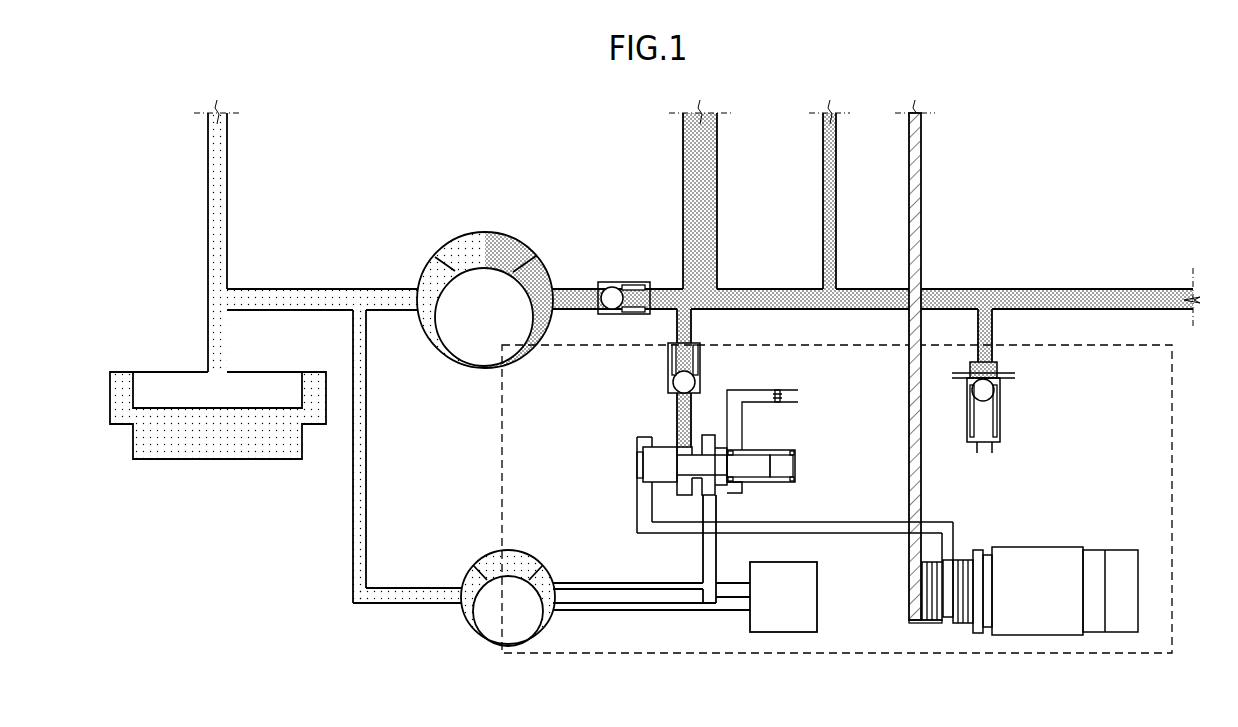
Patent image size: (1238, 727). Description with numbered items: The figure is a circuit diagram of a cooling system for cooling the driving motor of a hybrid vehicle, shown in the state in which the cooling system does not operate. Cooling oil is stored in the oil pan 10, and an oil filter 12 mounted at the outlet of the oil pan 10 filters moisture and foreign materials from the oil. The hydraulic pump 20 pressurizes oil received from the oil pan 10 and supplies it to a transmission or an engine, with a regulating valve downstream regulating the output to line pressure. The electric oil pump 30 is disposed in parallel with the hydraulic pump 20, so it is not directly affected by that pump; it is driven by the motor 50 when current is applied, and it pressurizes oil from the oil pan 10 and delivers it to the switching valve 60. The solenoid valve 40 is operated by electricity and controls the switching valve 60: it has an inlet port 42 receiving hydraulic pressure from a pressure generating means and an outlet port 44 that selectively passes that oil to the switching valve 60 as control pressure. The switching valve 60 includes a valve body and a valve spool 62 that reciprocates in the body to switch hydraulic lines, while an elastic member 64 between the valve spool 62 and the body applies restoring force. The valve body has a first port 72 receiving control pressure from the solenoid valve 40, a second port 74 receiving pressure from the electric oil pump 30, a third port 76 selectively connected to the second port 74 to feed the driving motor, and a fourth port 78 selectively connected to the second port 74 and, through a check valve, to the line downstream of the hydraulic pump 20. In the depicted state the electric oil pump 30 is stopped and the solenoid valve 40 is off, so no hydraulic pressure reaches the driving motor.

The oil pan 10 is at (178, 445).
The oil filter 12 is at (165, 383).
The hydraulic pump 20 is at (485, 231).
The electric oil pump 30 is at (474, 630).
The solenoid valve 40 is at (1037, 547).
The inlet port 42 is at (915, 568).
The outlet port 44 is at (945, 562).
The motor 50 is at (818, 598).
The switching valve 60 is at (763, 468).
The valve spool 62 is at (651, 462).
The elastic member 64 is at (774, 450).
The first port 72 is at (645, 486).
The second port 74 is at (707, 484).
The third port 76 is at (737, 437).
The fourth port 78 is at (685, 450).